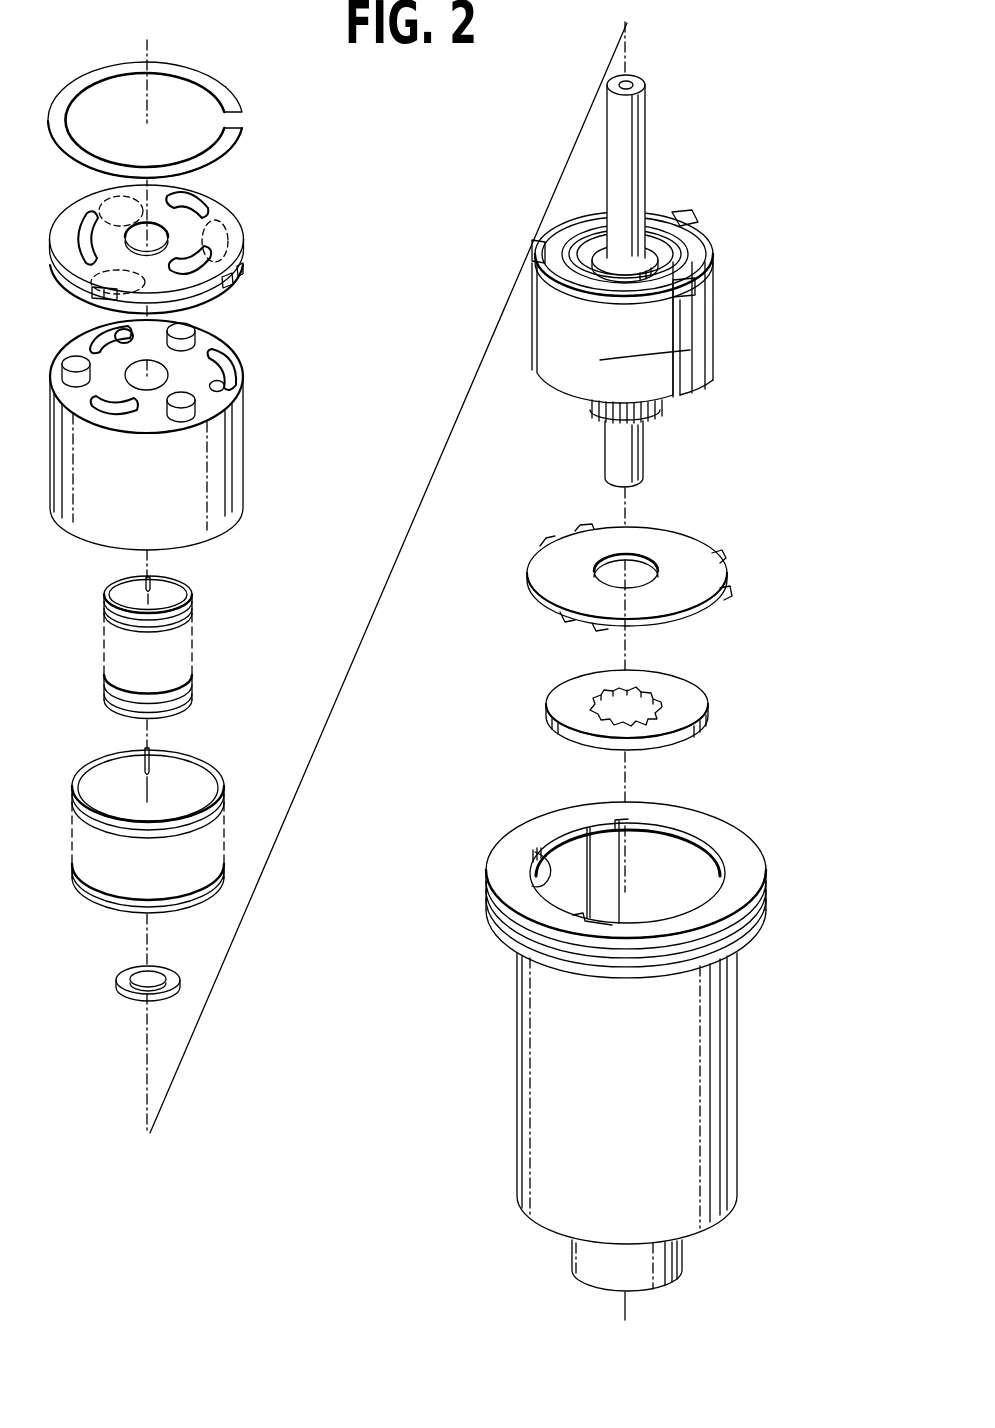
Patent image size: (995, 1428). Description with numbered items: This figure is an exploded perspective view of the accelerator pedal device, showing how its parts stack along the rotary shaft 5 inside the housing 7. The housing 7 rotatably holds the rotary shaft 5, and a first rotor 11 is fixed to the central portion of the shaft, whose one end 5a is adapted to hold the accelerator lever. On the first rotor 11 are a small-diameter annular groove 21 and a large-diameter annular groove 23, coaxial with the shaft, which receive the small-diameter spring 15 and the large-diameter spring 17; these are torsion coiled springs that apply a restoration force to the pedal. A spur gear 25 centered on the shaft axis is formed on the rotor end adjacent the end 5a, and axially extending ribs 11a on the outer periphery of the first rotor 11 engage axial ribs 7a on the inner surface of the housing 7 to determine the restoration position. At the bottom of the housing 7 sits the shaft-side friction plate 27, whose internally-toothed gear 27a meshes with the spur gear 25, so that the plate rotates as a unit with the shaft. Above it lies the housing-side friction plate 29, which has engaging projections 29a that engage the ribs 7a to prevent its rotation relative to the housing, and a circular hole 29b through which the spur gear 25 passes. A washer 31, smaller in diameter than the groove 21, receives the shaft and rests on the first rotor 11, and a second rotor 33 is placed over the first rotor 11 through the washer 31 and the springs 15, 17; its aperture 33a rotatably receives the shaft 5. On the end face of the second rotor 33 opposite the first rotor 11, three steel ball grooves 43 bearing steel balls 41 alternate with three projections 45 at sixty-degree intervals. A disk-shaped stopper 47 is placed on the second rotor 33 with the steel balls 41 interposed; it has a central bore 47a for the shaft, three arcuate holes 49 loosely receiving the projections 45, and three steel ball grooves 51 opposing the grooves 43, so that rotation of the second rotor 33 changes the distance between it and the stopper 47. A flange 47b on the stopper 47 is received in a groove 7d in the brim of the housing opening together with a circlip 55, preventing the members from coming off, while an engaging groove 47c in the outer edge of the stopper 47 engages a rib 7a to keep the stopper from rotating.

The rotary shaft 5 is at (618, 117).
The one end of the rotary shaft 5a is at (613, 467).
The housing 7 is at (579, 1046).
The axial ribs 7a is at (600, 882).
The groove 7d is at (552, 870).
The first rotor 11 is at (593, 305).
The axially extending ribs 11a is at (688, 342).
The small-diameter spring 15 is at (190, 593).
The large-diameter spring 17 is at (197, 757).
The small-diameter annular groove 21 is at (587, 252).
The large-diameter annular groove 23 is at (557, 257).
The spur gear 25 is at (605, 412).
The shaft-side friction plate 27 is at (573, 732).
The internally-toothed gear 27a is at (613, 728).
The housing-side friction plate 29 is at (585, 598).
The engaging projections 29a is at (567, 623).
The circular hole 29b is at (617, 565).
The washer 31 is at (172, 978).
The second rotor 33 is at (202, 435).
The aperture 33a is at (155, 376).
The steel balls 41 is at (219, 387).
The steel ball grooves 43 is at (223, 365).
The projections 45 is at (188, 402).
The stopper 47 is at (203, 237).
The central bore 47a is at (163, 227).
The flange 47b is at (212, 197).
The engaging groove 47c is at (112, 303).
The arcuate holes 49 is at (207, 260).
The steel ball grooves 51 is at (162, 187).
The circlip 55 is at (222, 92).